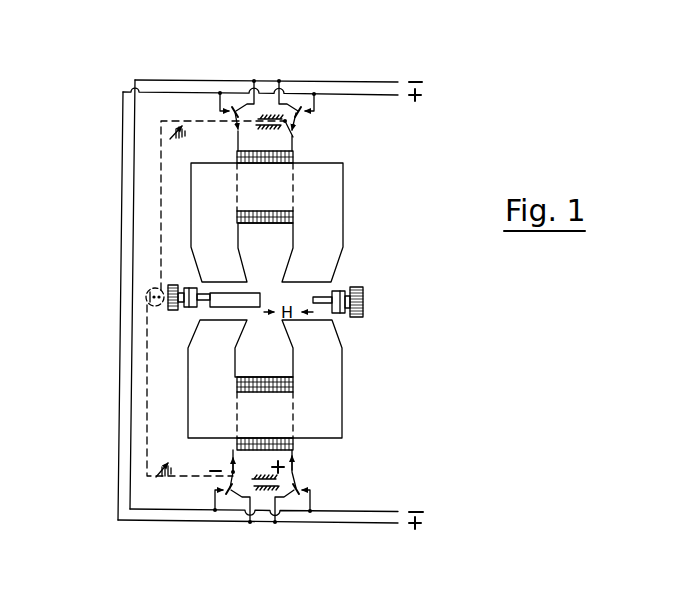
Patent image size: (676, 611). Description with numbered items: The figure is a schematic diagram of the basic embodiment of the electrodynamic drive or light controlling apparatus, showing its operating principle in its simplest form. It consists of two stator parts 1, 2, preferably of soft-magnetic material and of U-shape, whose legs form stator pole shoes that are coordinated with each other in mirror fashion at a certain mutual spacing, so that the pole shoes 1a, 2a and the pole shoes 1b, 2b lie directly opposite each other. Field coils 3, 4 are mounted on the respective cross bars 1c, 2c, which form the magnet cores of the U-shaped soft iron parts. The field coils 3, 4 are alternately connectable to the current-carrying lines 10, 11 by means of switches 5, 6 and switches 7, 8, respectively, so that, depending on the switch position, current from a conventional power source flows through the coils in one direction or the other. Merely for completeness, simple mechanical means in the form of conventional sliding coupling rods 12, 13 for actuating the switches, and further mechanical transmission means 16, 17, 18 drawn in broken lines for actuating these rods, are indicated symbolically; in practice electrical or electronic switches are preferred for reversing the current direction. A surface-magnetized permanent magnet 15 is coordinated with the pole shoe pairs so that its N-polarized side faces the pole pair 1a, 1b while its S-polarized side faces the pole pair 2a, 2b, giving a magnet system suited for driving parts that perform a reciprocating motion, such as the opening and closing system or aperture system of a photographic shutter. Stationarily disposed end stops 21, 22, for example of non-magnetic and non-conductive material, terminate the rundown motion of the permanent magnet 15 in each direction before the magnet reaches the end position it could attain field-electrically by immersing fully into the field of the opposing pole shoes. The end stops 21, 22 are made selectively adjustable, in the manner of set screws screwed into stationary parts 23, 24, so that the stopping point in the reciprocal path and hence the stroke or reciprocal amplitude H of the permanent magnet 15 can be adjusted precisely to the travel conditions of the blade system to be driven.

The stator part 1 is at (268, 222).
The pole shoe 1a is at (200, 256).
The pole shoe 1b is at (331, 257).
The cross bar 1c is at (272, 192).
The stator part 2 is at (269, 379).
The pole shoe 2a is at (203, 327).
The pole shoe 2b is at (332, 329).
The cross bar 2c is at (270, 425).
The field coil 3 is at (287, 217).
The field coil 4 is at (288, 385).
The switch 5 is at (236, 110).
The switch 6 is at (300, 110).
The switch 7 is at (233, 472).
The switch 8 is at (292, 472).
The current-carrying line 10 is at (142, 520).
The current-carrying line 11 is at (172, 509).
The sliding coupling rod 12 is at (293, 139).
The sliding coupling rod 13 is at (147, 455).
The permanent magnet 15 is at (249, 302).
The mechanical transmission means 16 is at (147, 387).
The mechanical transmission means 17 is at (161, 157).
The mechanical transmission means 18 is at (146, 294).
The end stop 21 is at (198, 287).
The end stop 22 is at (317, 298).
The stationary part 23 is at (170, 310).
The stationary part 24 is at (342, 313).